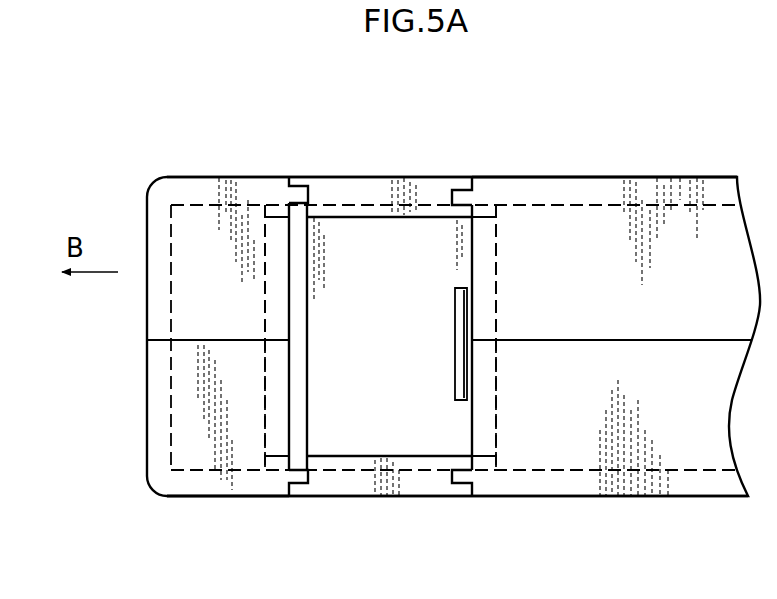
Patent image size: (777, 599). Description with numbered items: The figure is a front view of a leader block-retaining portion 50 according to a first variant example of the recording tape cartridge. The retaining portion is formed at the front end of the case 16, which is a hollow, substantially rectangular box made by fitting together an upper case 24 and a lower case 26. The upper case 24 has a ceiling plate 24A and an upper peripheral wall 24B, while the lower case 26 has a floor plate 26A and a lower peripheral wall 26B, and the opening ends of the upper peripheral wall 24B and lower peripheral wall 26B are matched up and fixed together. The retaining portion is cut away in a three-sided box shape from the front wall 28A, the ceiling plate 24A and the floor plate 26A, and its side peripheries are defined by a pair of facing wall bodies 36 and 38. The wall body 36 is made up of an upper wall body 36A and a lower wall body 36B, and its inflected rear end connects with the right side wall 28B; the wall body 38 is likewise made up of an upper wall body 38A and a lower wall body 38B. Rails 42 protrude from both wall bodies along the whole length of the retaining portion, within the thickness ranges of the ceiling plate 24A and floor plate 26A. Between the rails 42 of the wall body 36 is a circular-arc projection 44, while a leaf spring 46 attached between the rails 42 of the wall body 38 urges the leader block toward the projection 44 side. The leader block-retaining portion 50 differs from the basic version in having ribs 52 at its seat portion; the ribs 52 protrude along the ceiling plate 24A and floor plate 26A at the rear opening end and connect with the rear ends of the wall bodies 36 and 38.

The case 16 is at (85, 330).
The upper case 24 is at (145, 288).
The lower case 26 is at (147, 407).
The ceiling plate 24A is at (442, 177).
The floor plate 26A is at (323, 489).
The upper peripheral wall 24B is at (153, 247).
The lower peripheral wall 26B is at (160, 377).
The front wall 28A is at (633, 522).
The right side wall 28B is at (309, 113).
The wall body 36 is at (50, 435).
The upper wall body 36A is at (268, 327).
The lower wall body 36B is at (273, 432).
The wall body 38 is at (634, 250).
The upper wall body 38A is at (488, 274).
The lower wall body 38B is at (492, 367).
The rails 42 is at (308, 193).
The projection 44 is at (300, 328).
The leaf spring 46 is at (450, 340).
The leader block-retaining portion 50 is at (417, 447).
The ribs 52 is at (378, 215).